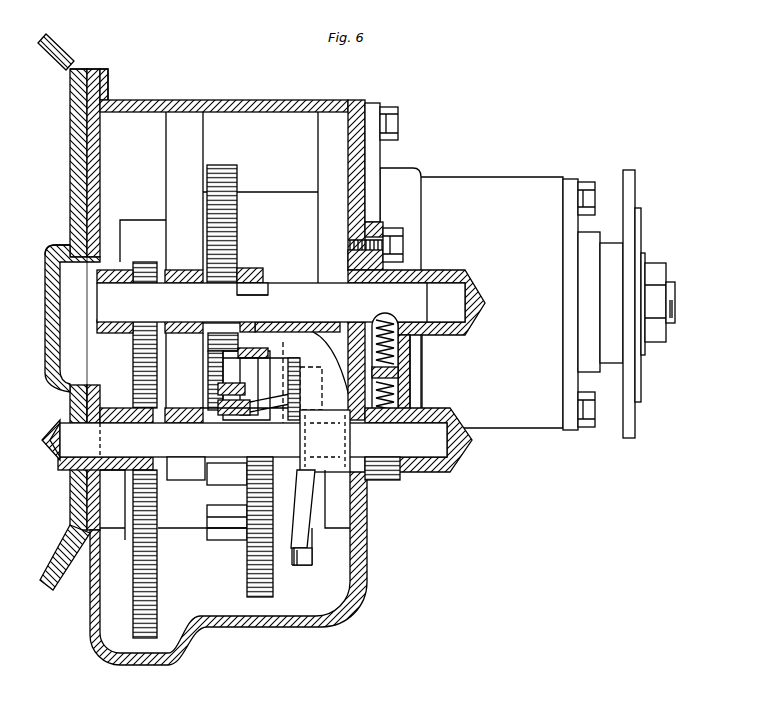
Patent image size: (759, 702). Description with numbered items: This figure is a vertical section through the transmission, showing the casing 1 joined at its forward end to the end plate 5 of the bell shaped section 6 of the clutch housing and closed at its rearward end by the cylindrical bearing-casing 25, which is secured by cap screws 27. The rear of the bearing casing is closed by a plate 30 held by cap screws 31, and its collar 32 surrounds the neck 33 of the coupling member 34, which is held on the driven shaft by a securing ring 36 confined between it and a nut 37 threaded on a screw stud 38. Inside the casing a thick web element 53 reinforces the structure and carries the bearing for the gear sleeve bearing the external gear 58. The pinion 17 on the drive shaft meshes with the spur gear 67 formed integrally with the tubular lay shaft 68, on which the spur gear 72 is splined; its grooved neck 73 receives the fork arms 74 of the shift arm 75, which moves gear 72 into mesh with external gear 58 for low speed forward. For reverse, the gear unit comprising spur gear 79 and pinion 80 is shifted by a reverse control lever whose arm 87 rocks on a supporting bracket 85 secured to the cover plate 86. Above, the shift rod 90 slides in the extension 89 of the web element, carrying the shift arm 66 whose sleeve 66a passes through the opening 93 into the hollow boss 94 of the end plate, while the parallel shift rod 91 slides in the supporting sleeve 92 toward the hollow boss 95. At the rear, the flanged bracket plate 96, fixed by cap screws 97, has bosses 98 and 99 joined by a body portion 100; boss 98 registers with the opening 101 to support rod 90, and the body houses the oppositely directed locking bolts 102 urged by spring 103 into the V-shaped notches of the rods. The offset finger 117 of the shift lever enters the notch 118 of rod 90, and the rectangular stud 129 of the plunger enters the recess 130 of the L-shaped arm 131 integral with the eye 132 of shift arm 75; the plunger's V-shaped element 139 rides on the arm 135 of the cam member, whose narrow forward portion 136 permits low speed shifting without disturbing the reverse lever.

The casing 1 is at (151, 101).
The end plate 5 is at (70, 159).
The bell shaped section 6 is at (61, 56).
The pinion 17 is at (144, 262).
The bearing-casing 25 is at (501, 182).
The cap screws 27 is at (394, 113).
The plate 30 is at (570, 180).
The cap screws 31 is at (586, 292).
The collar 32 is at (588, 247).
The neck 33 is at (613, 270).
The coupling member 34 is at (630, 173).
The securing ring 36 is at (645, 259).
The nut 37 is at (666, 274).
The screw stud 38 is at (675, 289).
The web element 53 is at (181, 110).
The external gear 58 is at (226, 165).
The shift arm 66 is at (128, 222).
The sleeve 66a is at (118, 333).
The spur gear 67 is at (158, 595).
The lay shaft 68 is at (185, 528).
The spur gear 72 is at (247, 583).
The grooved neck 73 is at (312, 557).
The fork arms 74 is at (297, 565).
The shift arm 75 is at (300, 540).
The spur gear 79 is at (313, 506).
The pinion 80 is at (232, 455).
The supporting bracket 85 is at (218, 407).
The cover plate 86 is at (371, 103).
The arm 87 is at (218, 389).
The extension 89 is at (178, 268).
The shift rod 90 is at (292, 285).
The shift rod 91 is at (186, 468).
The supporting sleeve 92 is at (74, 489).
The opening 93 is at (56, 262).
The hollow boss 94 is at (47, 300).
The hollow boss 95 is at (49, 458).
The flanged bracket plate 96 is at (416, 362).
The cap screws 97 is at (403, 246).
The boss 98 is at (455, 270).
The boss 99 is at (473, 465).
The body portion 100 is at (392, 389).
The opening 101 is at (353, 317).
The locking bolts 102 is at (412, 345).
The spring 103 is at (398, 373).
The offset finger 117 is at (250, 268).
The notch 118 is at (237, 291).
The stud 129 is at (259, 347).
The recess 130 is at (246, 321).
The L-shaped arm 131 is at (284, 322).
The eye 132 is at (349, 445).
The arm 135 is at (222, 320).
The narrow forward portion 136 is at (208, 342).
The V-shaped element 139 is at (252, 289).